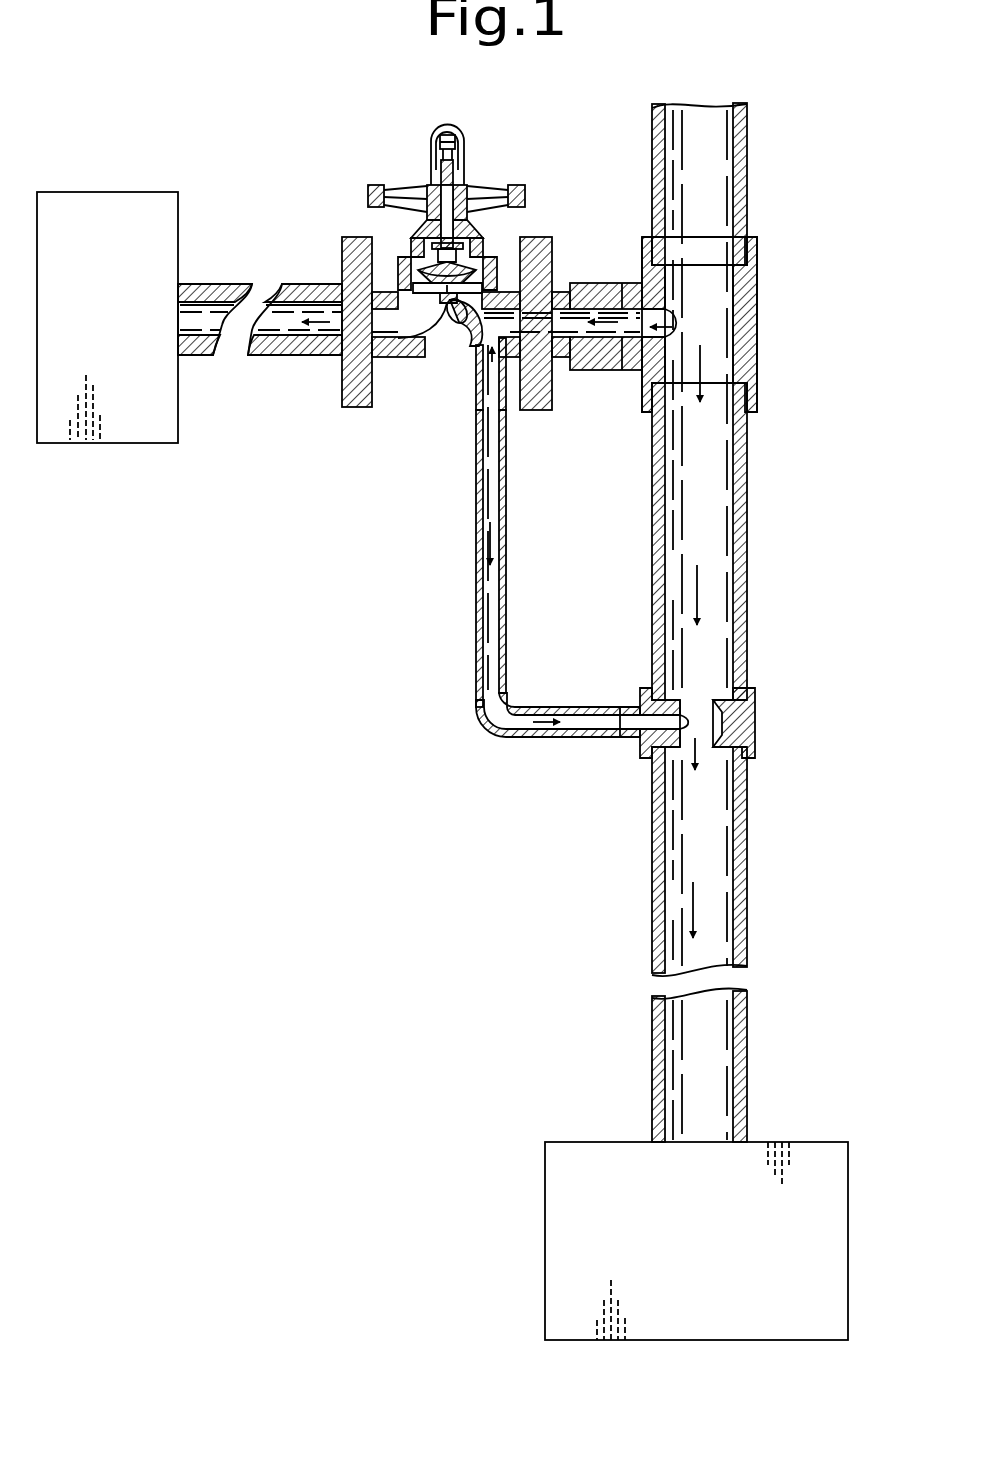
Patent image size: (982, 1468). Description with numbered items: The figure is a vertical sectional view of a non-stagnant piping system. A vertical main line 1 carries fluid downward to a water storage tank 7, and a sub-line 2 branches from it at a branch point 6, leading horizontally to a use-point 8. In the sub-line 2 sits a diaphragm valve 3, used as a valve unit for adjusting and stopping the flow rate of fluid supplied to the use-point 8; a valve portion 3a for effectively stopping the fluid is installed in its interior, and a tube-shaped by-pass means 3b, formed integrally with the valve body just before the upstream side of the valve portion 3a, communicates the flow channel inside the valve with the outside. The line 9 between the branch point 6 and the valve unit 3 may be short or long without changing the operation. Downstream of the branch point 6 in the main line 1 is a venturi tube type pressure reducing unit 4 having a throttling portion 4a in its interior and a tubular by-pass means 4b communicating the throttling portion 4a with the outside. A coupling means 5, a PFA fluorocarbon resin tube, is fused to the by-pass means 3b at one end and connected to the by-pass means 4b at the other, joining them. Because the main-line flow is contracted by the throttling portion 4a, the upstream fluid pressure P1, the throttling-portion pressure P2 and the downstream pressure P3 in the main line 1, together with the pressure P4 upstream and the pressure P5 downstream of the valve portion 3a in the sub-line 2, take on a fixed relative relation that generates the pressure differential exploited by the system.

The main line 1 is at (748, 152).
The sub-line 2 is at (307, 284).
The diaphragm valve 3 is at (463, 150).
The valve portion 3a is at (452, 322).
The by-pass means 3b is at (476, 396).
The pressure reducing unit 4 is at (755, 737).
The throttling portion 4a is at (692, 705).
The by-pass means 4b is at (620, 710).
The coupling means 5 is at (475, 662).
The branch point 6 is at (758, 357).
The water storage tank 7 is at (578, 1142).
The use-point 8 is at (140, 200).
The line 9 is at (622, 380).
The fluid pressure upstream of throttling portion P1 is at (717, 313).
The fluid pressure of throttling portion P2 is at (705, 725).
The downstream side fluid pressure P3 is at (713, 767).
The fluid pressure upstream of valve portion P4 is at (513, 320).
The fluid pressure downstream of valve portion P5 is at (340, 343).